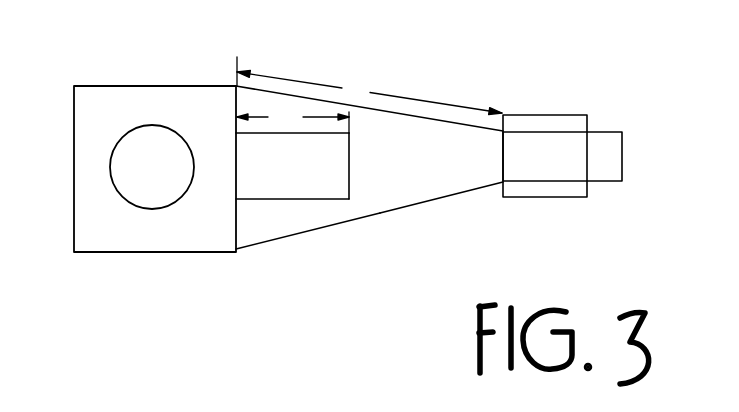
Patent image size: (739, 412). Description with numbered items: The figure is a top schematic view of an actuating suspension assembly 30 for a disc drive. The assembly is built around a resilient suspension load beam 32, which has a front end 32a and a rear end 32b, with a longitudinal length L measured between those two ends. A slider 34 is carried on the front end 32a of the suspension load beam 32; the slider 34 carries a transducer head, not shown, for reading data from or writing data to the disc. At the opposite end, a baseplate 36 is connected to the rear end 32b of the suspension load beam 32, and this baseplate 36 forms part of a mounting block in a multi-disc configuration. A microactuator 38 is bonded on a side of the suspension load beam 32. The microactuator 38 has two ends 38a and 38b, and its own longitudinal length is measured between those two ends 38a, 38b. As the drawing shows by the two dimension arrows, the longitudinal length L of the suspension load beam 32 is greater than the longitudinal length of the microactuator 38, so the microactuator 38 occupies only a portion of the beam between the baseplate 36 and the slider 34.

The actuating suspension assembly 30 is at (320, 63).
The suspension load beam 32 is at (385, 112).
The front end of suspension load beam 32a is at (483, 170).
The rear end of suspension load beam 32b is at (259, 228).
The slider 34 is at (532, 122).
The baseplate 36 is at (102, 86).
The microactuator 38 is at (302, 175).
The first end of microactuator 38a is at (335, 170).
The second end of microactuator 38b is at (255, 162).